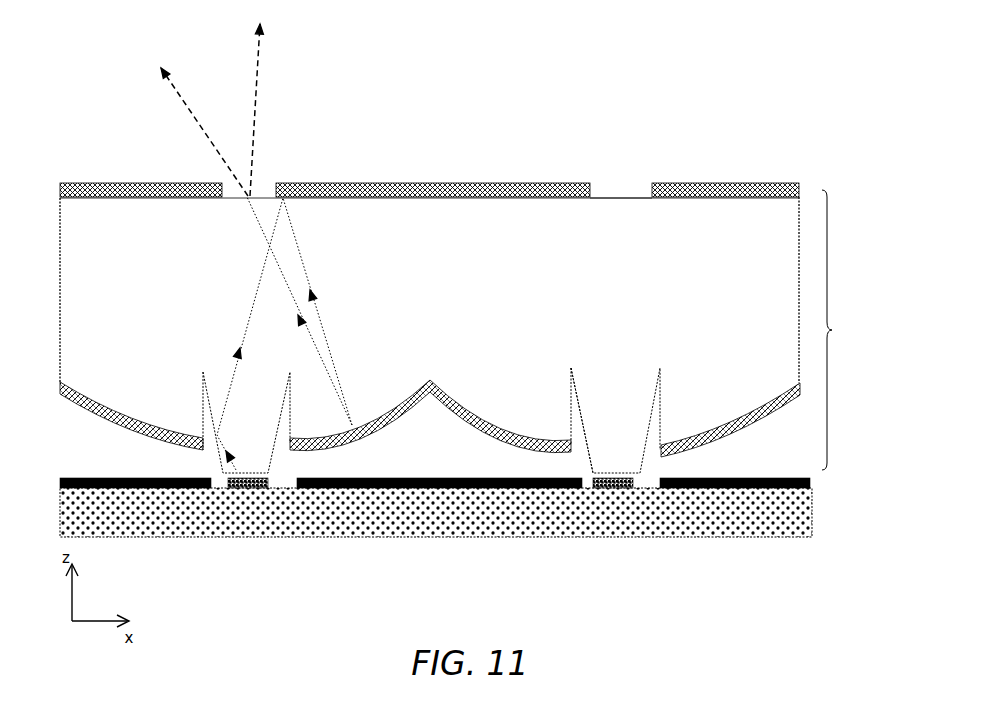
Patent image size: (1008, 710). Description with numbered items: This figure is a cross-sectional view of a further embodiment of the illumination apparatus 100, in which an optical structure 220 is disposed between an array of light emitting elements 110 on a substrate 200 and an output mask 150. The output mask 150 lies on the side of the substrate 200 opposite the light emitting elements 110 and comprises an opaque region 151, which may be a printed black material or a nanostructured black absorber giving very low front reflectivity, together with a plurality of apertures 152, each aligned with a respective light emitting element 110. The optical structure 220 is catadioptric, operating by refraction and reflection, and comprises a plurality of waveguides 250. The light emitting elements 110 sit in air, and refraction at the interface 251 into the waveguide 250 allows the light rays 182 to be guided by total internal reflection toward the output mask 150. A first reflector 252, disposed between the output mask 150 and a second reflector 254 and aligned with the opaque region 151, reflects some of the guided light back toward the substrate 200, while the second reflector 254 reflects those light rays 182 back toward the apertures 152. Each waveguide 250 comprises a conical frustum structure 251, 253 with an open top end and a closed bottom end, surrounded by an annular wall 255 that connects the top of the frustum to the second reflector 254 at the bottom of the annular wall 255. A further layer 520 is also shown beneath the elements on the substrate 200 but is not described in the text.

The illumination apparatus 100 is at (733, 113).
The light emitting elements 110 is at (282, 476).
The output mask 150 is at (800, 188).
The opaque region 151 is at (133, 183).
The apertures 152 is at (630, 190).
The light rays 182 is at (250, 315).
The substrate 200 is at (812, 505).
The optical structure 220 is at (848, 330).
The waveguide 250 is at (630, 398).
The interface 251 is at (623, 478).
The first reflector 252 is at (708, 197).
The conical frustum structure 253 is at (575, 375).
The second reflector 254 is at (785, 410).
The annular wall 255 is at (570, 405).
The electrode layer 520 is at (380, 490).